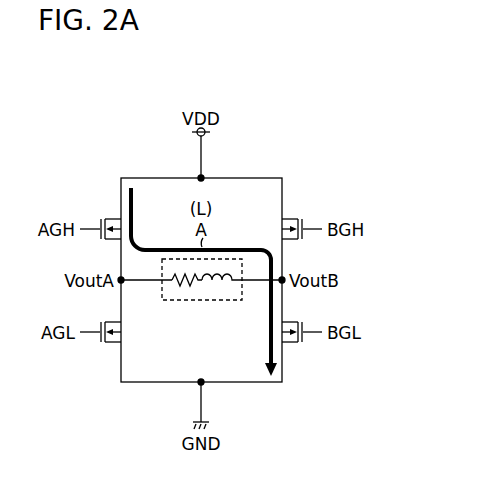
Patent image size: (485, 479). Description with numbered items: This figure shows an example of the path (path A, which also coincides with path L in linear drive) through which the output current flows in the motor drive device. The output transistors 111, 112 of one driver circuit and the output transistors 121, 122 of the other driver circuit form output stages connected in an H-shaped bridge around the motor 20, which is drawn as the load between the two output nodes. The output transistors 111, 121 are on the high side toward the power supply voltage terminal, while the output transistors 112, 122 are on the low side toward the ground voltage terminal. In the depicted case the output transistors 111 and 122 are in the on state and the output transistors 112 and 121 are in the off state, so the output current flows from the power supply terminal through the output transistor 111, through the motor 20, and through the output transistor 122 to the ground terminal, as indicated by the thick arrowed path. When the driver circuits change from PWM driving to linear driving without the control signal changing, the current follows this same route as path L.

The output transistor 111 is at (108, 218).
The output transistor 121 is at (295, 218).
The output transistor 112 is at (107, 344).
The output transistor 122 is at (296, 344).
The motor 20 is at (201, 301).